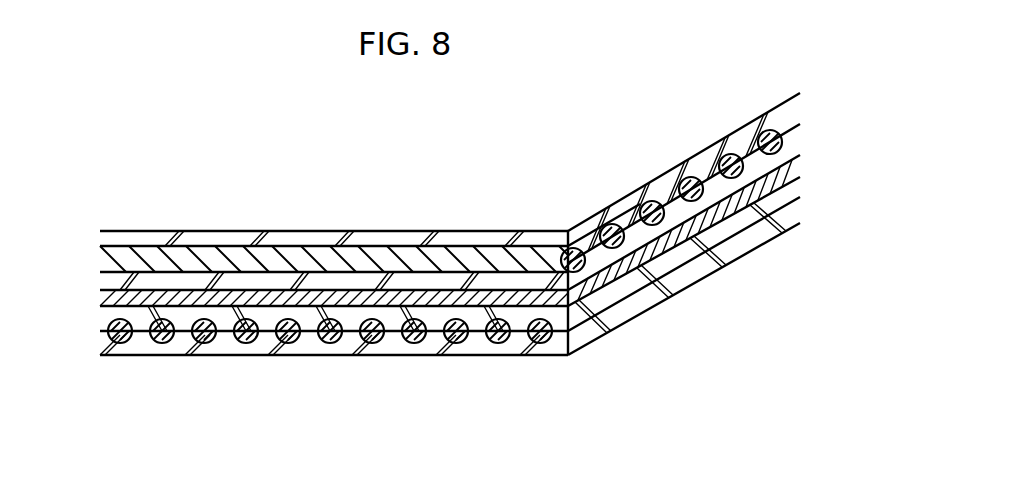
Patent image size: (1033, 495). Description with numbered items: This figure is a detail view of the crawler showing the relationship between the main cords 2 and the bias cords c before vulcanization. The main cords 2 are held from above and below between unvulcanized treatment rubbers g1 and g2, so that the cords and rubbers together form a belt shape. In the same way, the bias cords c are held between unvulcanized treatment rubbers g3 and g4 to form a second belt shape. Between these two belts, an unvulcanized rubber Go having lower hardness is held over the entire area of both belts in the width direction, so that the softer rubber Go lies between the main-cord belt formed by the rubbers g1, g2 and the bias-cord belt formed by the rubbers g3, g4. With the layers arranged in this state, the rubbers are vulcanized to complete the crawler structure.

The unvulcanized rubber g1 is at (107, 357).
The unvulcanized rubber g2 is at (103, 317).
The unvulcanized rubber g3 is at (102, 280).
The unvulcanized rubber g4 is at (110, 238).
The main cords 2 is at (498, 343).
The bias cords c is at (640, 192).
The unvulcanized rubber having lower hardness Go is at (392, 297).